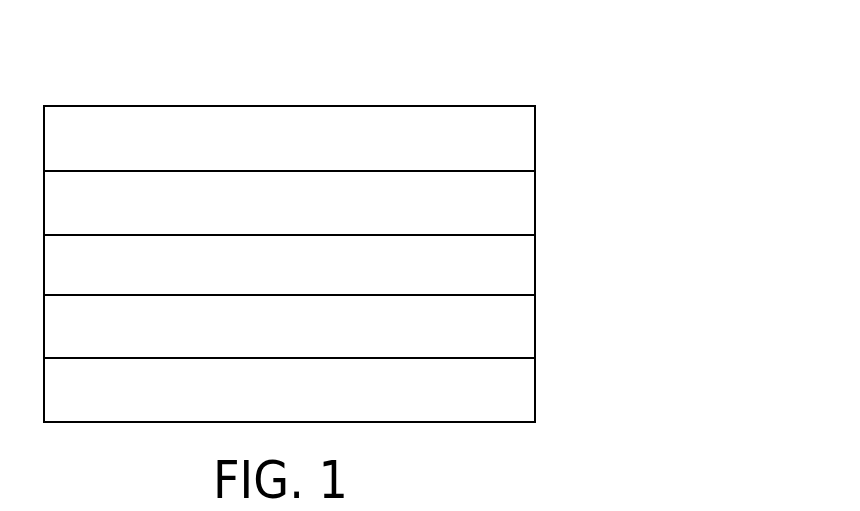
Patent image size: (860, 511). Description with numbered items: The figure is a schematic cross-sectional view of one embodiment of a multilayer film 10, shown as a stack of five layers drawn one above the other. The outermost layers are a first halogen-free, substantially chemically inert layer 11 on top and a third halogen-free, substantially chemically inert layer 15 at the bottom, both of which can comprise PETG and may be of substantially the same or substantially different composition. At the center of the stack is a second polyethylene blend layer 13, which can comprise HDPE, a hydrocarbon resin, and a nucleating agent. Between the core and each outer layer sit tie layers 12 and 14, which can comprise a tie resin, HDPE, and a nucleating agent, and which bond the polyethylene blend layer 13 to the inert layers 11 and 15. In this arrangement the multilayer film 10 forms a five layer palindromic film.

The multilayer film 10 is at (499, 92).
The first halogen-free, substantially chemically inert layer 11 is at (266, 157).
The tie layer 12 is at (266, 214).
The second polyethylene blend layer 13 is at (266, 290).
The tie layer 14 is at (266, 347).
The third halogen-free, substantially chemically inert layer 15 is at (266, 410).